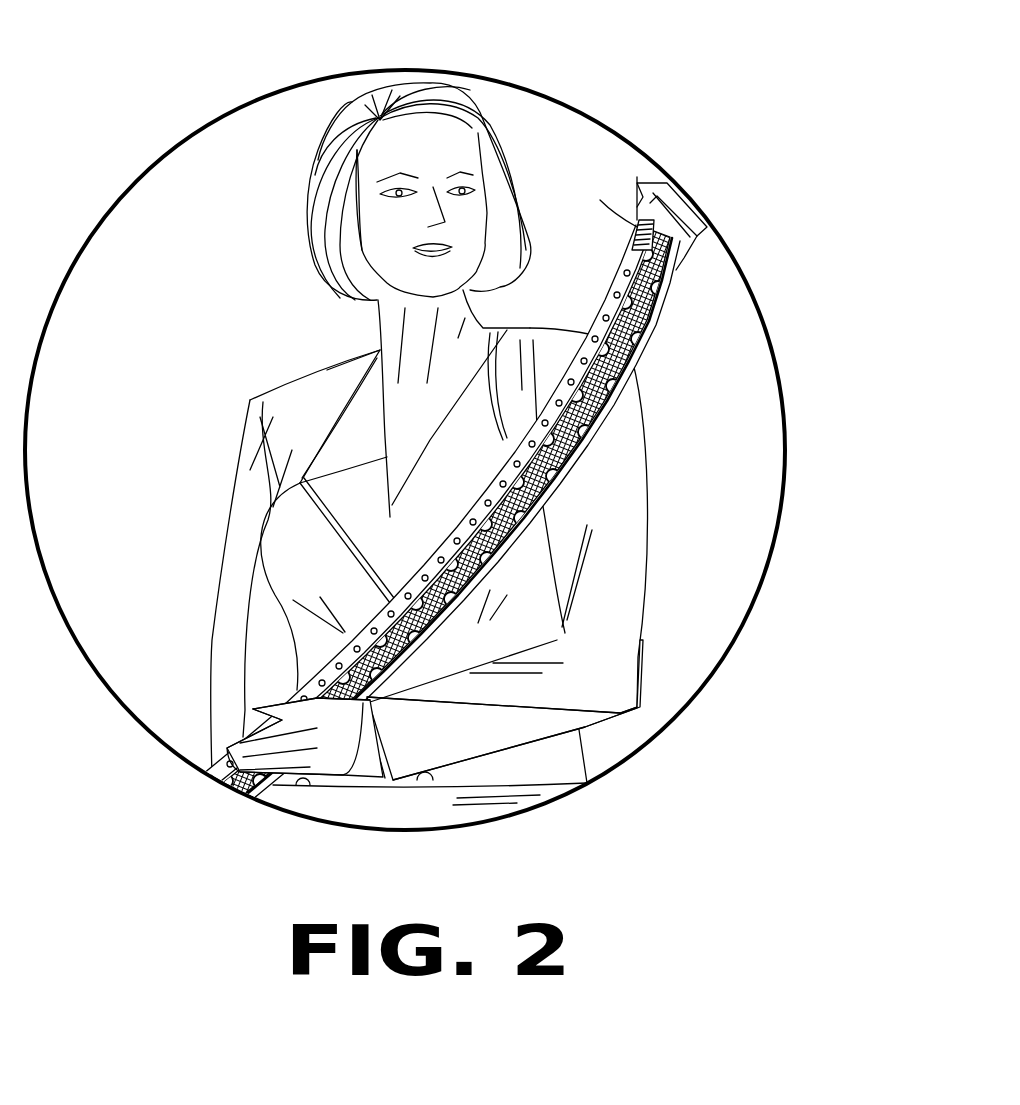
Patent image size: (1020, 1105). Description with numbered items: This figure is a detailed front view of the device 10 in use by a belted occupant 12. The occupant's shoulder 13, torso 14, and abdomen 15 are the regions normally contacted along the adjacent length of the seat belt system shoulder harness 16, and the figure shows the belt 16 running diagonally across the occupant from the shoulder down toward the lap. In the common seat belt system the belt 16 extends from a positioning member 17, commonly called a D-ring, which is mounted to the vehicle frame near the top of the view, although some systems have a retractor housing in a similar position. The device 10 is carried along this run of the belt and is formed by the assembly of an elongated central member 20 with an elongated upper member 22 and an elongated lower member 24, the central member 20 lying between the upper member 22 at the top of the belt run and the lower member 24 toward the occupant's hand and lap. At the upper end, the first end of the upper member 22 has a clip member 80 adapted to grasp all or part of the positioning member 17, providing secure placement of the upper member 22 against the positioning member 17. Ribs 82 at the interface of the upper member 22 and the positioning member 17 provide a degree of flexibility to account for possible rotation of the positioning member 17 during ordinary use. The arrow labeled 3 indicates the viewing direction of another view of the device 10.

The view direction of FIG. 3 is at (667, 355).
The device 10 is at (697, 482).
The belted occupant 12 is at (327, 157).
The shoulder 13 is at (322, 365).
The torso 14 is at (300, 483).
The abdomen 15 is at (262, 623).
The shoulder harness 16 is at (677, 277).
The positioning member 17 is at (682, 205).
The central member 20 is at (517, 556).
The upper member 22 is at (617, 392).
The lower member 24 is at (317, 698).
The clip member 80 is at (642, 180).
The ribs 82 is at (640, 220).